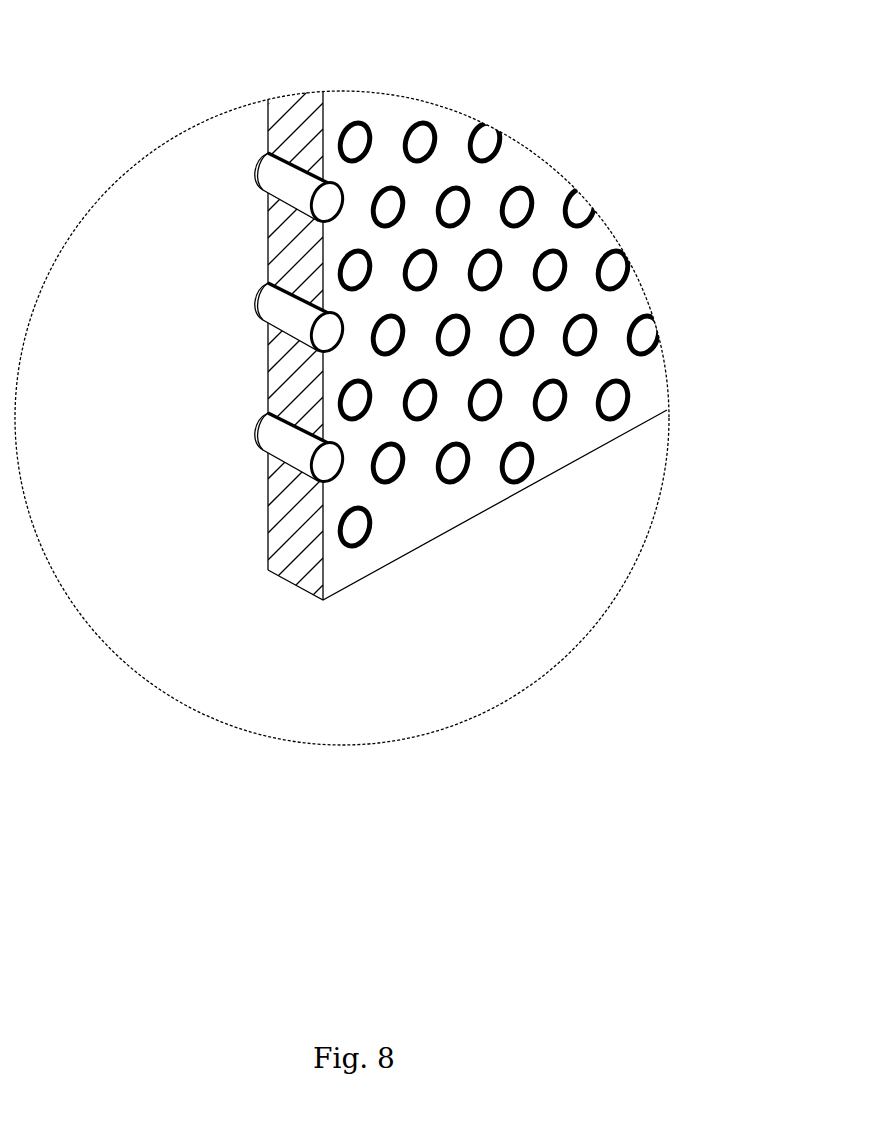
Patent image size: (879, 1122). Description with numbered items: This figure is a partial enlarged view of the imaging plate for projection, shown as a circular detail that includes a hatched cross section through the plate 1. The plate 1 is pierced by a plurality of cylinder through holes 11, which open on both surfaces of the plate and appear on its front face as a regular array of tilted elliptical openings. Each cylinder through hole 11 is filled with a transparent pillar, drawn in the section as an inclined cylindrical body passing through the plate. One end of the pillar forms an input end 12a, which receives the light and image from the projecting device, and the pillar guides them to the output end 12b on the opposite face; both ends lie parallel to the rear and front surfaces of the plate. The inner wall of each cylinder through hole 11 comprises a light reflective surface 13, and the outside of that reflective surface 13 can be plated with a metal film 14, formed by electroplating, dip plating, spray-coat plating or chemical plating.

The plate 1 is at (522, 162).
The cylinder through holes 11 is at (340, 205).
The input end 12a is at (257, 175).
The output end 12b is at (325, 200).
The light reflective surface 13 is at (290, 172).
The metal film 14 is at (262, 163).